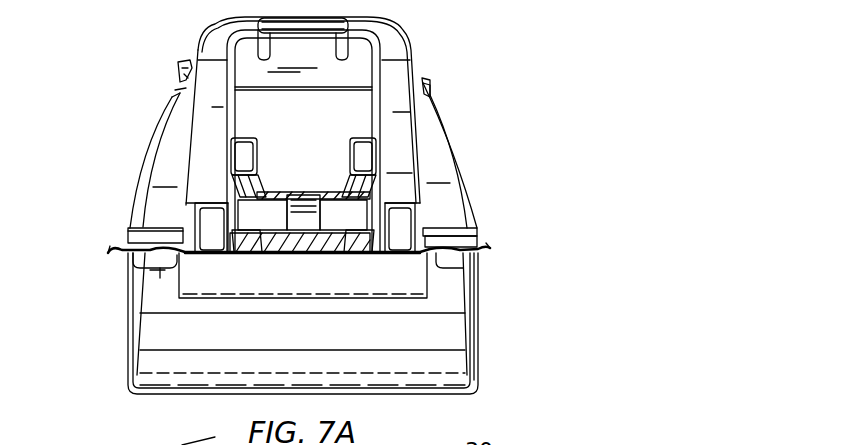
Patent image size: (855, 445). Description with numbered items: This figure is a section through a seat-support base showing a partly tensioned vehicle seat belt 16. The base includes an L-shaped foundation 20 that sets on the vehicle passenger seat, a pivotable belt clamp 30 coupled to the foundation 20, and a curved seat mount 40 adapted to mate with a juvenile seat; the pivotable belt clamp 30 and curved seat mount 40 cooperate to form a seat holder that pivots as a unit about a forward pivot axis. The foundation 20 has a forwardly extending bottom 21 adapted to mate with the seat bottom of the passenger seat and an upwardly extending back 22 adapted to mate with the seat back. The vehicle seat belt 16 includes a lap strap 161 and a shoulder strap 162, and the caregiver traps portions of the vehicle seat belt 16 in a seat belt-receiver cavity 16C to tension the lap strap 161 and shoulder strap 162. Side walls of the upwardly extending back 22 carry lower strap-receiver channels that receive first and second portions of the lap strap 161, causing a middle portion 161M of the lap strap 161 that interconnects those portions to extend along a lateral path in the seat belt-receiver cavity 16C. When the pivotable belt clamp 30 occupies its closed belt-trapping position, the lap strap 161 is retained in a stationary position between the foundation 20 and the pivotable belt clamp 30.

The pivotable belt clamp 30 is at (413, 35).
The curved seat mount 40 is at (277, 107).
The shoulder strap 162 is at (182, 67).
The L-shaped foundation 20 is at (458, 115).
The upwardly extending back 22 is at (478, 193).
The bottom 21 is at (484, 322).
The vehicle seat belt 16 is at (115, 240).
The lap strap 161 is at (117, 257).
The middle portion of the lap strap 161M is at (272, 255).
The seat belt-receiver cavity 16C is at (370, 279).